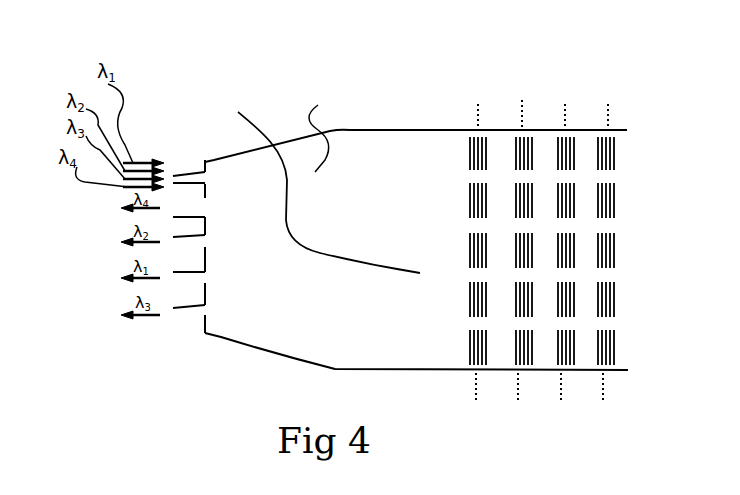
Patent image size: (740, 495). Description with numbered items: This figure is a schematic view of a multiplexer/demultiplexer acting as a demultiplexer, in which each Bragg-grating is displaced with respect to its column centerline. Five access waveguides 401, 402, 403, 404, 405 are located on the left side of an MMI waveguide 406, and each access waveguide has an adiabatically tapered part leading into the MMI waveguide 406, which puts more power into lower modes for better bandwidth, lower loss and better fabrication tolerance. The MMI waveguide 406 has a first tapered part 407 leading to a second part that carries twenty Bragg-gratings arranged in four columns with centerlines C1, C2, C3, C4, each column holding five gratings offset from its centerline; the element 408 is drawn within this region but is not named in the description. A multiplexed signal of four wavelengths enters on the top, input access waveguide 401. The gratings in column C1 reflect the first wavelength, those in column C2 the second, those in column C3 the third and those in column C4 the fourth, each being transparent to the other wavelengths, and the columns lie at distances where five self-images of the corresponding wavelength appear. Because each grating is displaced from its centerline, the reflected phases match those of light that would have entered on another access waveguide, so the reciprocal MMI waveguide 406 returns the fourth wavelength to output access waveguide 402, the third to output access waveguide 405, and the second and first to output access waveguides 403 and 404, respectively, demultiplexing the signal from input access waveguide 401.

The input access waveguide 401 is at (200, 172).
The output access waveguide 402 is at (205, 198).
The output access waveguide 403 is at (205, 247).
The output access waveguide 404 is at (205, 283).
The output access waveguide 405 is at (205, 315).
The MMI waveguide 406 is at (382, 184).
The first tapered part 407 is at (322, 125).
The curved reflector boundary 408 is at (320, 178).
The column centerline C1 is at (608, 104).
The column centerline C2 is at (565, 104).
The column centerline C3 is at (522, 100).
The column centerline C4 is at (478, 104).